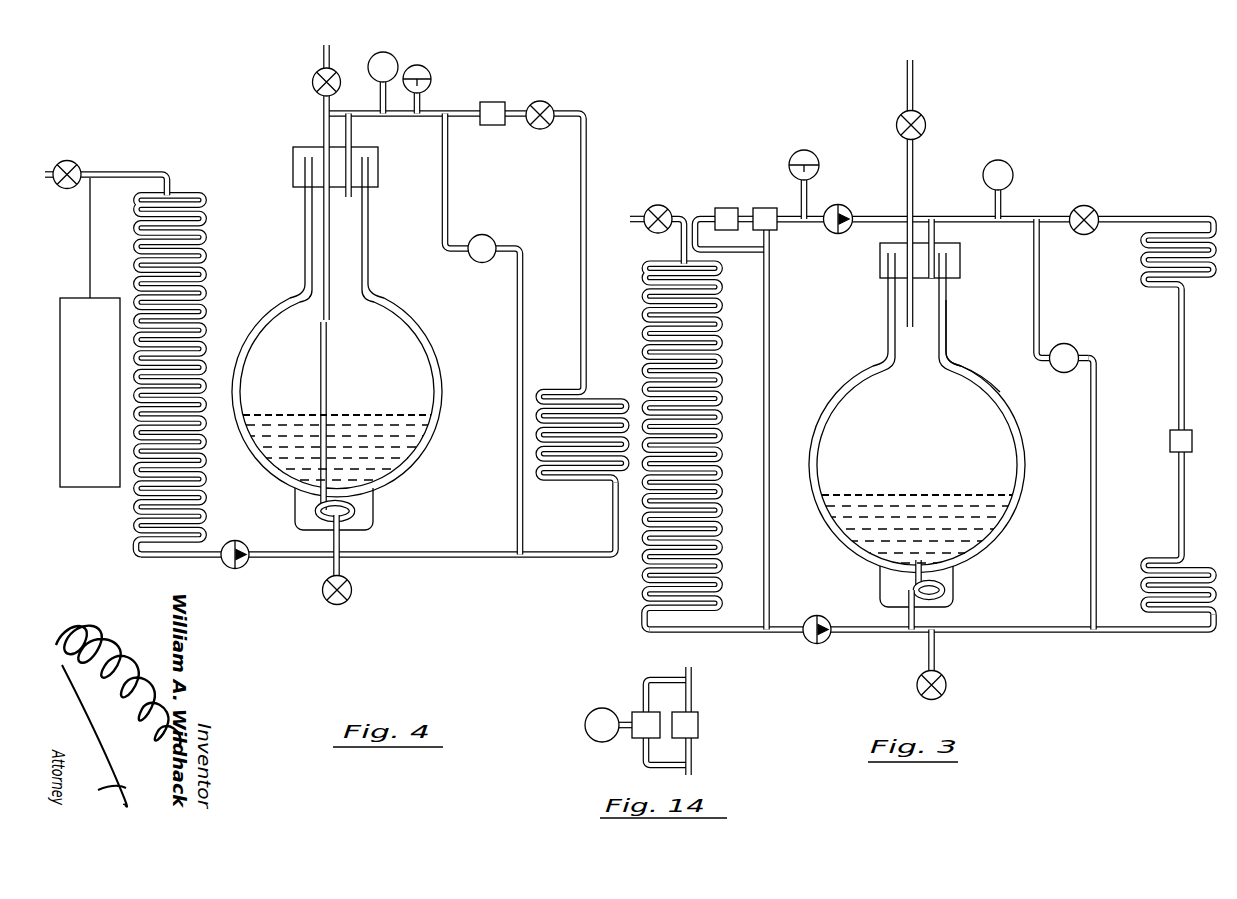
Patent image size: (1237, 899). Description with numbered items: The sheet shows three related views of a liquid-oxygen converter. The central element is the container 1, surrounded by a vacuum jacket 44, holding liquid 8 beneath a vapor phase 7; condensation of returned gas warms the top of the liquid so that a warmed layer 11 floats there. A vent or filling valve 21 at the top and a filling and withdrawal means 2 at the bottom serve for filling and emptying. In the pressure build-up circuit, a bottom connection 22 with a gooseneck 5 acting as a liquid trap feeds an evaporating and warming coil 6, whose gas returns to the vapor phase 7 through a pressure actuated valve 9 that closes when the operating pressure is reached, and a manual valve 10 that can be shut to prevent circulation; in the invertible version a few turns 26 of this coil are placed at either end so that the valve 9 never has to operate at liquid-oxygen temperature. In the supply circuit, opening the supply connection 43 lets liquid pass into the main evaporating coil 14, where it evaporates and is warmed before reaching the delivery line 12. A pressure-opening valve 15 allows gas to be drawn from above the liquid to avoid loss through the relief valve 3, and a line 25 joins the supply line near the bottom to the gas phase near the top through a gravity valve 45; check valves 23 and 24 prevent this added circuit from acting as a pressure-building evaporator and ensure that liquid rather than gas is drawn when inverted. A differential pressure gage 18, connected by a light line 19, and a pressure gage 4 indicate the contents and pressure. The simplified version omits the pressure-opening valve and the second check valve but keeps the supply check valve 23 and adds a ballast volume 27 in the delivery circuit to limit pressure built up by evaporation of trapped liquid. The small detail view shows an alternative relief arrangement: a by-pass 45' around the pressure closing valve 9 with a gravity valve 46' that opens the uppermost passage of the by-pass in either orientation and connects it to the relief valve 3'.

In FIG. 4, the container 1 is at (283, 309).
In FIG. 3, the container 1 is at (876, 371).
In FIG. 4, the filling and withdrawal means 2 is at (352, 594).
In FIG. 3, the filling and withdrawal means 2 is at (947, 687).
In FIG. 4, the pressure relief valve 3 is at (439, 88).
In FIG. 3, the pressure relief valve 3 is at (791, 172).
In FIG. 4, the pressure gage 4 is at (398, 61).
In FIG. 3, the pressure gage 4 is at (1008, 163).
In FIG. 4, the gooseneck 5 is at (358, 511).
In FIG. 3, the gooseneck 5 is at (945, 593).
In FIG. 4, the evaporating and warming coil 6 is at (582, 482).
In FIG. 4, the vapor phase 7 is at (420, 381).
In FIG. 3, the vapor phase 7 is at (990, 425).
In FIG. 4, the liquid 8 is at (405, 445).
In FIG. 3, the liquid 8 is at (1000, 531).
In FIG. 4, the pressure actuated valve 9 is at (501, 103).
In FIG. 3, the pressure actuated valve 9 is at (1190, 448).
In FIG. 14, the pressure actuated valve 9 is at (700, 726).
In FIG. 4, the manual valve 10 is at (555, 108).
In FIG. 3, the manual valve 10 is at (1098, 213).
In FIG. 4, the layer of warmed liquid 11 is at (430, 417).
In FIG. 3, the layer of warmed liquid 11 is at (1015, 496).
In FIG. 4, the delivery line 12 is at (50, 170).
In FIG. 3, the delivery line 12 is at (637, 226).
In FIG. 3, the main evaporating coil 14 is at (699, 447).
In FIG. 3, the pressure-opening valve 15 is at (725, 207).
In FIG. 4, the differential pressure gage 18 is at (490, 237).
In FIG. 3, the differential pressure gage 18 is at (1082, 357).
In FIG. 4, the line to the gage 19 is at (517, 321).
In FIG. 3, the line to the gage 19 is at (1098, 546).
In FIG. 4, the vent or filling valve 21 is at (311, 83).
In FIG. 3, the vent or filling valve 21 is at (926, 122).
In FIG. 4, the bottom connection 22 is at (445, 553).
In FIG. 4, the check valve 23 is at (243, 566).
In FIG. 3, the check valve 23 is at (815, 644).
In FIG. 3, the check valve 24 is at (845, 208).
In FIG. 3, the line 25 is at (770, 369).
In FIG. 3, the turns of the coil 26 is at (1145, 270).
In FIG. 4, the ballast volume 27 is at (86, 478).
In FIG. 4, the supply connection 43 is at (80, 166).
In FIG. 3, the supply connection 43 is at (661, 204).
In FIG. 3, the vacuum jacket 44 is at (976, 388).
In FIG. 3, the gravity valve 45 is at (783, 233).
In FIG. 14, the relief valve 3' is at (603, 738).
In FIG. 14, the by-pass 45' is at (664, 737).
In FIG. 14, the gravity valve 46' is at (632, 740).